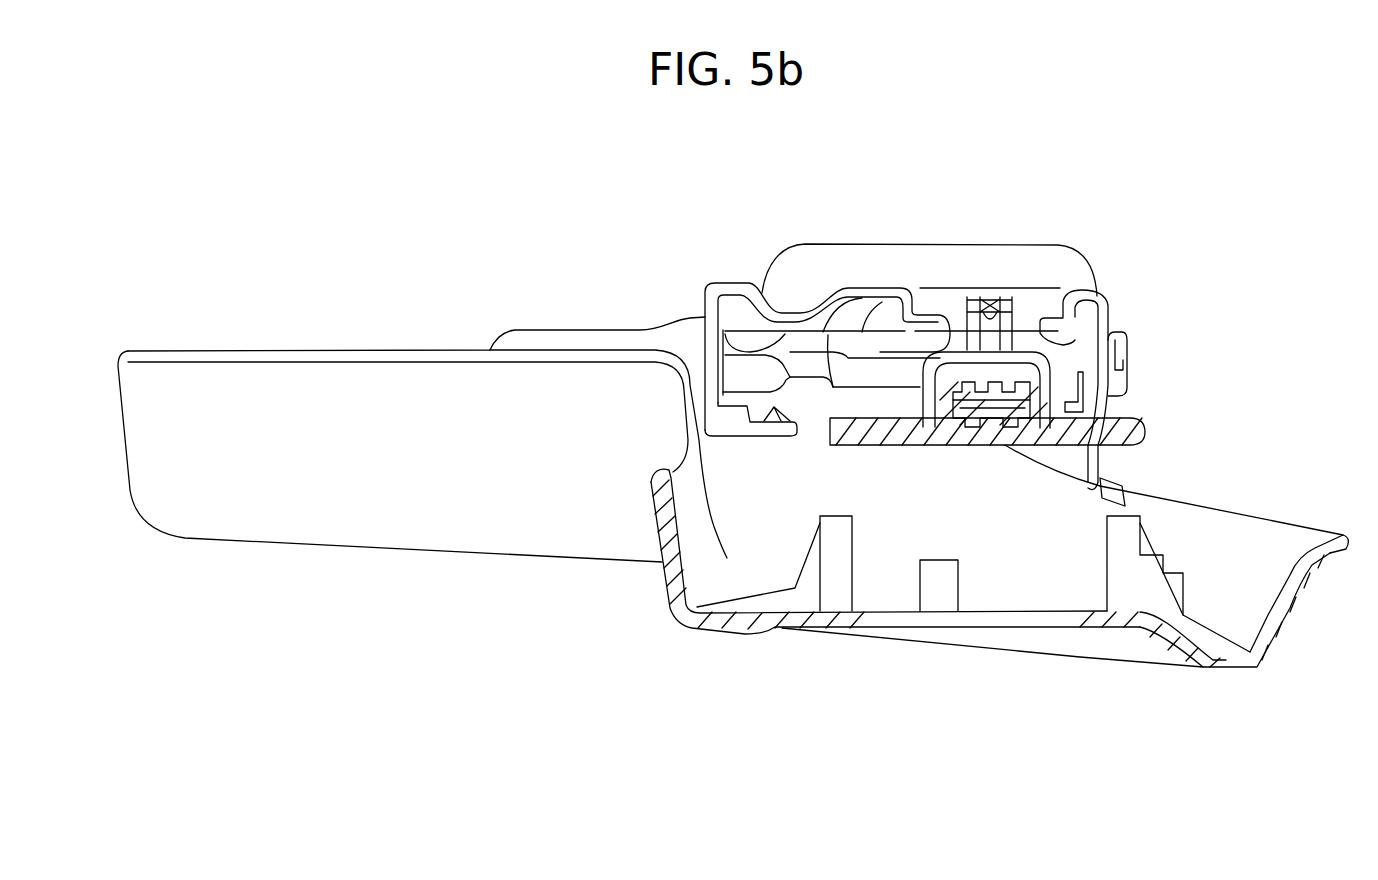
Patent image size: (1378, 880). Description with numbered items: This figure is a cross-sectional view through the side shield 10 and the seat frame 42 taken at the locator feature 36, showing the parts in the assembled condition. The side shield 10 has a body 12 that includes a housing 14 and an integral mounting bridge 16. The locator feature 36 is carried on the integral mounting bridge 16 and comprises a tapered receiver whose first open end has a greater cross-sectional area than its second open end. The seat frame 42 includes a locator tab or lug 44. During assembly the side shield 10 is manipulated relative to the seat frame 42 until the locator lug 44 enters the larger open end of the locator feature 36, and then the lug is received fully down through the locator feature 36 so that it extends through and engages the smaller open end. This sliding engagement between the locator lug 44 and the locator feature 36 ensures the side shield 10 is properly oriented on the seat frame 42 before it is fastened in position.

The side shield 10 is at (323, 607).
The body 12 is at (475, 524).
The housing 14 is at (668, 577).
The integral mounting bridge 16 is at (1130, 435).
The locator feature 36 is at (1042, 354).
The seat frame 42 is at (1042, 236).
The locator lug 44 is at (1028, 370).